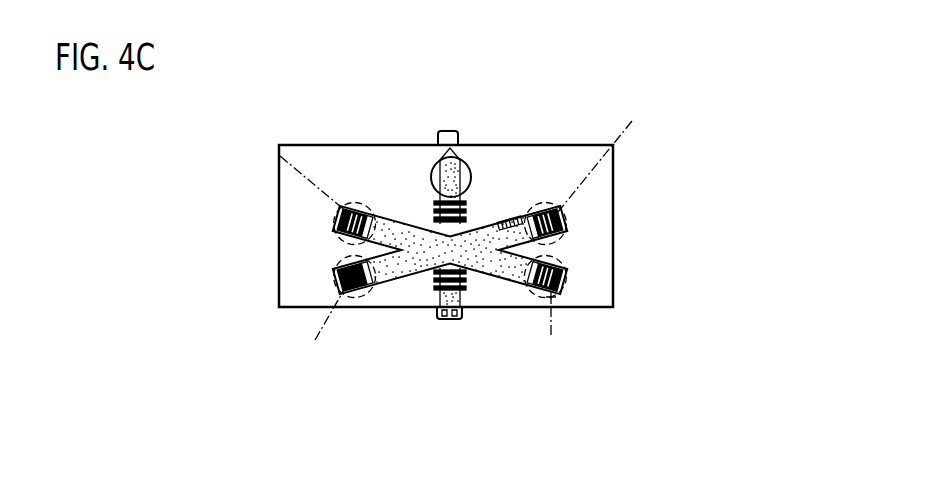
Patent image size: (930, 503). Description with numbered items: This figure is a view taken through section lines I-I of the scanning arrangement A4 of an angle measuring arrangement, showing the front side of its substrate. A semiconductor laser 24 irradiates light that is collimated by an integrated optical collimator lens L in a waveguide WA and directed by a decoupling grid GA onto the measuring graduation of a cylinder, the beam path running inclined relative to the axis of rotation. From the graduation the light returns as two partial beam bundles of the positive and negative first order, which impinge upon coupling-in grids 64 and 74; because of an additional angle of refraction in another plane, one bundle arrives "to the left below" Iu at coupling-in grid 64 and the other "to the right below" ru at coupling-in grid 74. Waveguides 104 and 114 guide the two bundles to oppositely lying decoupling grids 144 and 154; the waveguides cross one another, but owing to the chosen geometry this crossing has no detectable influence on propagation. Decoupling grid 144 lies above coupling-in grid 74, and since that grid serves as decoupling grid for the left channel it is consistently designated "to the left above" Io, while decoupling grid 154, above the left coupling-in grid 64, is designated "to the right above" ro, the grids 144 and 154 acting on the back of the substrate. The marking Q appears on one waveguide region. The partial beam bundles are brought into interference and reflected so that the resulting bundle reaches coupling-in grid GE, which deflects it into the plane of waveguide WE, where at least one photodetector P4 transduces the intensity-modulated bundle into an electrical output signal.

The scanning arrangement A4 is at (600, 197).
The semiconductor laser 24 is at (458, 131).
The coupling-in grid 64 is at (338, 295).
The coupling-in grid 74 is at (567, 288).
The waveguide 104 is at (398, 273).
The waveguide 114 is at (497, 273).
The decoupling grid 144 is at (565, 224).
The decoupling grid 154 is at (333, 216).
The decoupling grid GA is at (436, 212).
The waveguide WA is at (432, 197).
The integrated optical collimator lens L is at (433, 193).
The cross-section marking Q is at (497, 228).
The section lines I—I I-I is at (591, 103).
The left above position Io is at (606, 158).
The right above position ro is at (268, 152).
The left below position Iu is at (321, 318).
The right below position ru is at (550, 328).
The photodetector P4 is at (437, 318).
The coupling-in grid GE is at (464, 279).
The waveguide WE is at (436, 302).